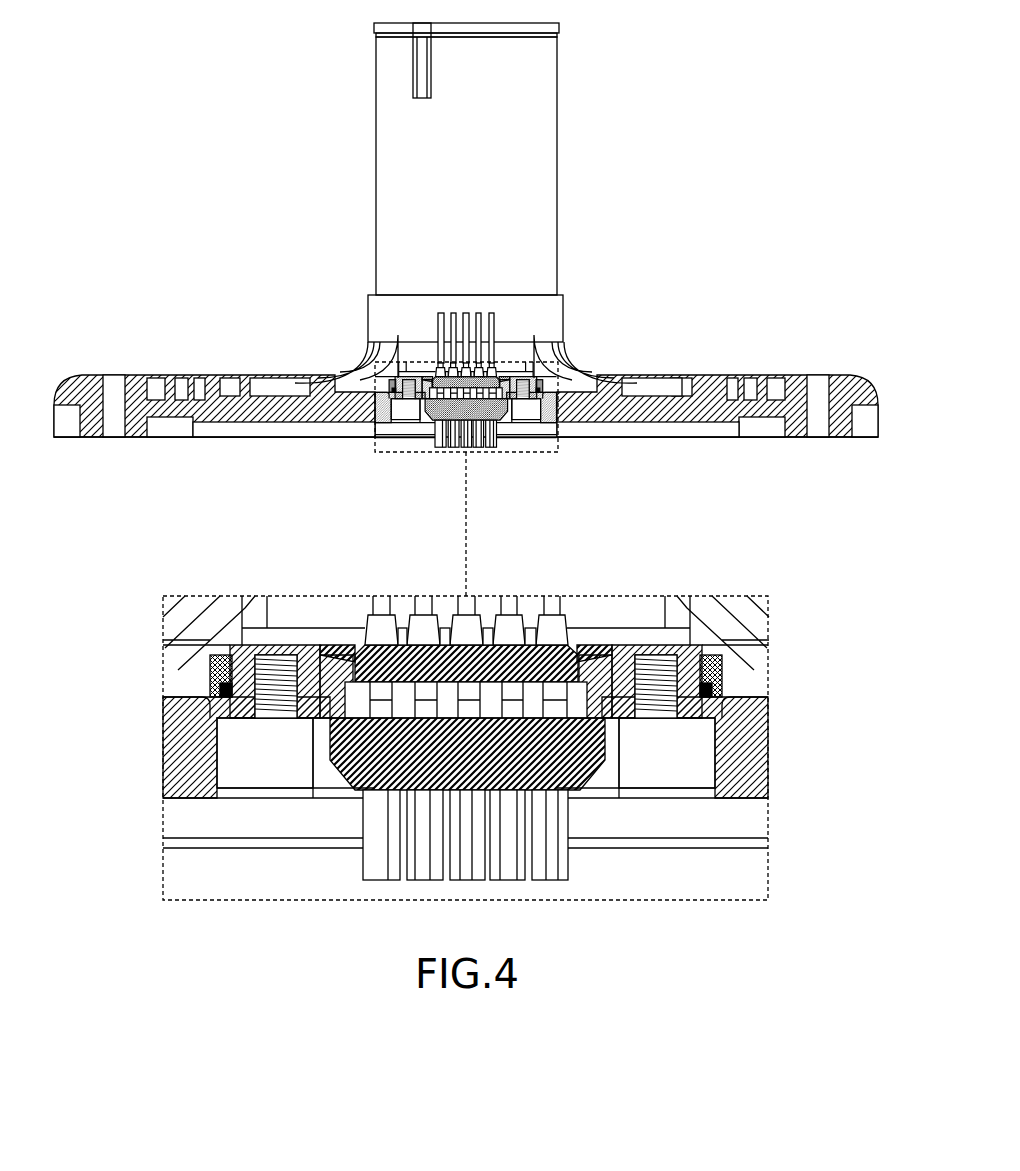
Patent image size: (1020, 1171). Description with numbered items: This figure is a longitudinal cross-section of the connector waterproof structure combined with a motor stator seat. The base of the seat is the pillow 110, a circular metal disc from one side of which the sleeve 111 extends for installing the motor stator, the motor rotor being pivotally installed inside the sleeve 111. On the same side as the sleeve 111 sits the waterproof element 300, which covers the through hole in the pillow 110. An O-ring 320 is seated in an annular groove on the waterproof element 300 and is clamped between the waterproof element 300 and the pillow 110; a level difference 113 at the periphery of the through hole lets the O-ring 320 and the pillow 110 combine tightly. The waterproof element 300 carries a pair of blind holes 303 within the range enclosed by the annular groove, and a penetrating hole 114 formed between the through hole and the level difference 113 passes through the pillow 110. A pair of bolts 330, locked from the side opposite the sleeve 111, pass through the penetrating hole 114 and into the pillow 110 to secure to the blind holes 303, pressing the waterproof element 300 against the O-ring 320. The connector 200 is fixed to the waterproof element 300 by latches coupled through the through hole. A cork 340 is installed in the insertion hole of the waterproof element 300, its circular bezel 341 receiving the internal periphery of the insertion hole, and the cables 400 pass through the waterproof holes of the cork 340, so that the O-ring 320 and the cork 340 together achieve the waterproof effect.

The pillow 110 is at (277, 271).
The sleeve 111 is at (540, 155).
The level difference 113 is at (725, 697).
The penetrating hole 114 is at (185, 700).
The connector 200 is at (455, 447).
The waterproof element 300 is at (430, 372).
The blind hole 303 is at (707, 645).
The O-ring 320 is at (527, 387).
The bolt 330 is at (525, 405).
The cork 340 is at (510, 640).
The circular bezel 341 is at (572, 645).
The cables 400 is at (495, 327).